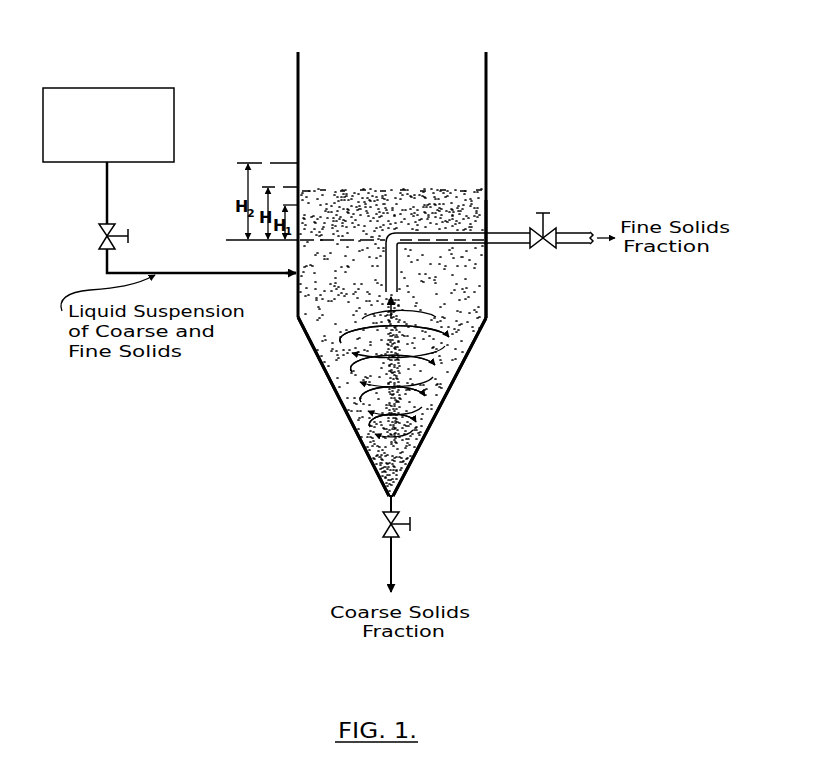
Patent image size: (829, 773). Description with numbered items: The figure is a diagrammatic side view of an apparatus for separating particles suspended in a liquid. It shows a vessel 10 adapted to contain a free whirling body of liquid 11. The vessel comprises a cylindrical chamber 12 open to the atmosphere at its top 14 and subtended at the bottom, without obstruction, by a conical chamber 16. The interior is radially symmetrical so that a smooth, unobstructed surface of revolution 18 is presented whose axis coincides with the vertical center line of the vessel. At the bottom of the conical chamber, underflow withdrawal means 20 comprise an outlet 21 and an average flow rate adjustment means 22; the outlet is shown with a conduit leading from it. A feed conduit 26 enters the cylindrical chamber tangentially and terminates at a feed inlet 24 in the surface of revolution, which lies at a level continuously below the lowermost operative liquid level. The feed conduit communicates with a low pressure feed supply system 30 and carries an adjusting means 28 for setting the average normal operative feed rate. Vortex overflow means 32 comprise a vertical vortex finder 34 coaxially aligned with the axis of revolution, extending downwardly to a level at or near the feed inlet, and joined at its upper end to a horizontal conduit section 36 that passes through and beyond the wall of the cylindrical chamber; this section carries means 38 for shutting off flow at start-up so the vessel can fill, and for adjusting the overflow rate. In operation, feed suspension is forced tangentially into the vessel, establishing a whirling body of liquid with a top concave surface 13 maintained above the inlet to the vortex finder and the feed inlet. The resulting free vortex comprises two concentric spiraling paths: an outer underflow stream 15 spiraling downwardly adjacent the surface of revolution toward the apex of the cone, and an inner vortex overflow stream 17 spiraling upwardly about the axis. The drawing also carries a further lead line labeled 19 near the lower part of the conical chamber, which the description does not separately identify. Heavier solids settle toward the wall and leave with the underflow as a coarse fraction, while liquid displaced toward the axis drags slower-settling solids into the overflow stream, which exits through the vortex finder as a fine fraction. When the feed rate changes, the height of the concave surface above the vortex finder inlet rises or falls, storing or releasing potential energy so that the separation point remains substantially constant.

The vessel 10 is at (472, 354).
The whirling body of liquid 11 is at (336, 382).
The cylindrical chamber 12 is at (488, 311).
The top concave surface 13 is at (438, 195).
The top of the cylindrical chamber 14 is at (455, 68).
The underflow stream 15 is at (333, 352).
The conical chamber 16 is at (431, 420).
The vortex overflow stream 17 is at (357, 400).
The surface of revolution 18 is at (447, 381).
The lower conical region 19 is at (363, 446).
The underflow withdrawal means 20 is at (387, 498).
The outlet 21 is at (395, 506).
The average flow rate adjustment means 22 is at (383, 524).
The feed inlet 24 is at (296, 281).
The feed conduit 26 is at (242, 276).
The adjusting means 28 is at (103, 229).
The low pressure feed supply system 30 is at (90, 161).
The vortex overflow means 32 is at (457, 240).
The vortex finder 34 is at (400, 270).
The horizontal conduit section 36 is at (503, 232).
The flow shut-off means 38 is at (548, 229).